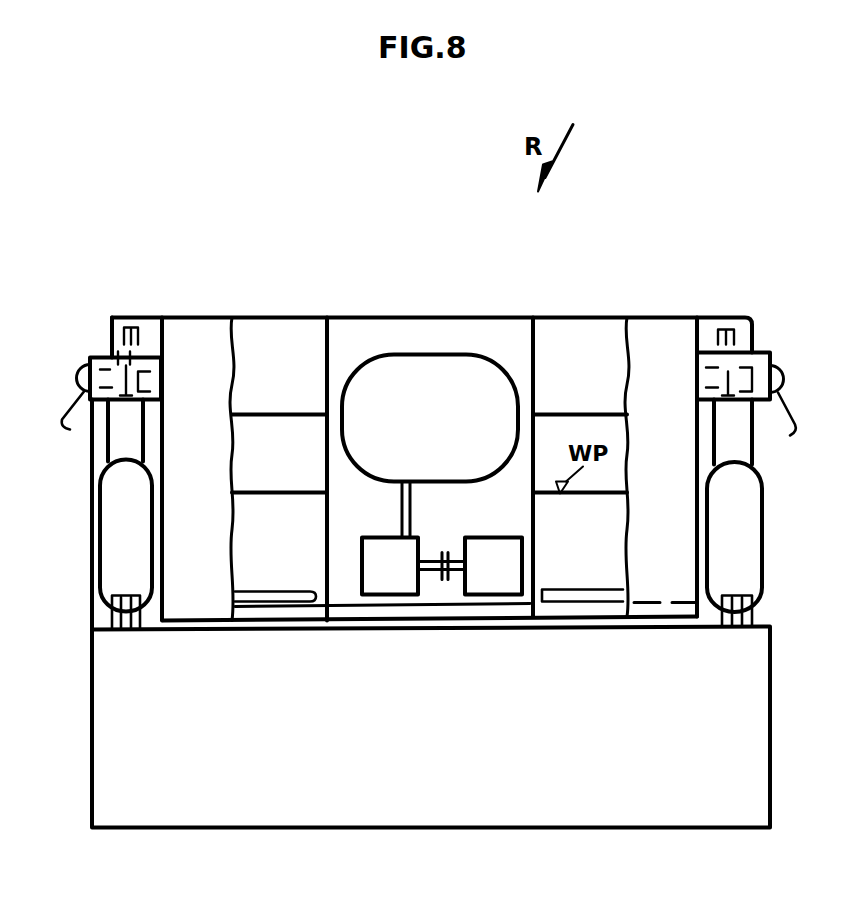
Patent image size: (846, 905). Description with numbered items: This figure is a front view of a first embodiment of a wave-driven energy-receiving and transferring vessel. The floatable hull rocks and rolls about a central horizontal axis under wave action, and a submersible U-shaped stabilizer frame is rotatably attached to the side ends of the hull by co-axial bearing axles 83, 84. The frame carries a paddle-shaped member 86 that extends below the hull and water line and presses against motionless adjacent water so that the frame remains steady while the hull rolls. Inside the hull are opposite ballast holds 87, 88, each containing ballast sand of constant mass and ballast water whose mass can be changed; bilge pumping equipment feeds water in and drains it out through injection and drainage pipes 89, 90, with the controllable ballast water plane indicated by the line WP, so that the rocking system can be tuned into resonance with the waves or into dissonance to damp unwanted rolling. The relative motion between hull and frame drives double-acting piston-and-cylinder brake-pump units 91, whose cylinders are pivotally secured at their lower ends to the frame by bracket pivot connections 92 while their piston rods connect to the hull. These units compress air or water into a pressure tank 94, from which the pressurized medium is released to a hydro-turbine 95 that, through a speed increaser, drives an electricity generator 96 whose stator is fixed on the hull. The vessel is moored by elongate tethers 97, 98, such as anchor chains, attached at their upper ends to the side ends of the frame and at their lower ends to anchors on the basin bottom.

The axle 83 is at (103, 357).
The axle 84 is at (752, 352).
The paddle-shaped member 86 is at (443, 767).
The ballast hold 87 is at (290, 350).
The ballast hold 88 is at (587, 357).
The injection and drainage pipe 89 is at (266, 601).
The injection and drainage pipe 90 is at (590, 604).
The brake-pump unit 91 is at (768, 459).
The bracket pivot connection 92 is at (752, 619).
The pressure tank 94 is at (433, 395).
The hydro-turbine 95 is at (392, 578).
The electricity generator 96 is at (493, 578).
The tether 97 is at (58, 412).
The tether 98 is at (788, 428).